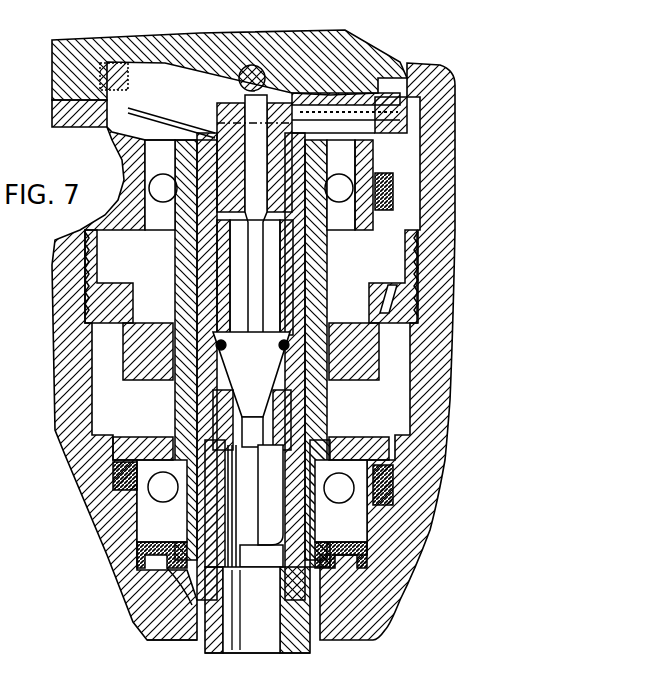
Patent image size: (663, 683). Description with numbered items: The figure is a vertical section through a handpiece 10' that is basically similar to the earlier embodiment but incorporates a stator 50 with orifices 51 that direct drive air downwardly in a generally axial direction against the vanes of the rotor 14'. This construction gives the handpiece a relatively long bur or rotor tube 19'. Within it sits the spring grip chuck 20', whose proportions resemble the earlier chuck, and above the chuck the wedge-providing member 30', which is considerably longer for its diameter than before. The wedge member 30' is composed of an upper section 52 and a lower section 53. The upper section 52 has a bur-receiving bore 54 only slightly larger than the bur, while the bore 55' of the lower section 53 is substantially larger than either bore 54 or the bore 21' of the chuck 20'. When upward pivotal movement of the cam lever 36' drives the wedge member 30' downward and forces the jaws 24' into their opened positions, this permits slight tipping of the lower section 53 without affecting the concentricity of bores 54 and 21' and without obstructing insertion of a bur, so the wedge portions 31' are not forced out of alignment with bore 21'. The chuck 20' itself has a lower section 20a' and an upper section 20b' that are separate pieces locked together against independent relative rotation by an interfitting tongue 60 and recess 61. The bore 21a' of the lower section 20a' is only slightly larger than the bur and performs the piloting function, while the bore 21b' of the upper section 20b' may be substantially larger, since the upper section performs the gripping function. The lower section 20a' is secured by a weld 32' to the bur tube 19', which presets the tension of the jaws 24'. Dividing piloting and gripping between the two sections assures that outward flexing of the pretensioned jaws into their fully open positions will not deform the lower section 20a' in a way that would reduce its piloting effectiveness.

The cam lever 36' is at (229, 50).
The handpiece 10' is at (259, 70).
The spring grip chuck 20' is at (201, 397).
The rotor 14' is at (407, 351).
The stator 50 is at (420, 266).
The orifices 51 is at (402, 294).
The wedge portions 31' is at (157, 351).
The lower section 53 is at (339, 344).
The jaws 24' is at (163, 350).
The wedge-providing member 30' is at (332, 350).
The bur-receiving bore 54 is at (278, 250).
The bore 55' is at (251, 374).
The recess 61 is at (280, 548).
The bore of upper section 21b' is at (261, 553).
The bore 21' is at (257, 610).
The bore of lower section 21a' is at (257, 667).
The upper section 52 is at (310, 256).
The tongue 60 is at (296, 566).
The bur tube 19' is at (257, 468).
The upper section 20b' is at (253, 461).
The weld 32' is at (252, 609).
The lower section 20a' is at (139, 653).